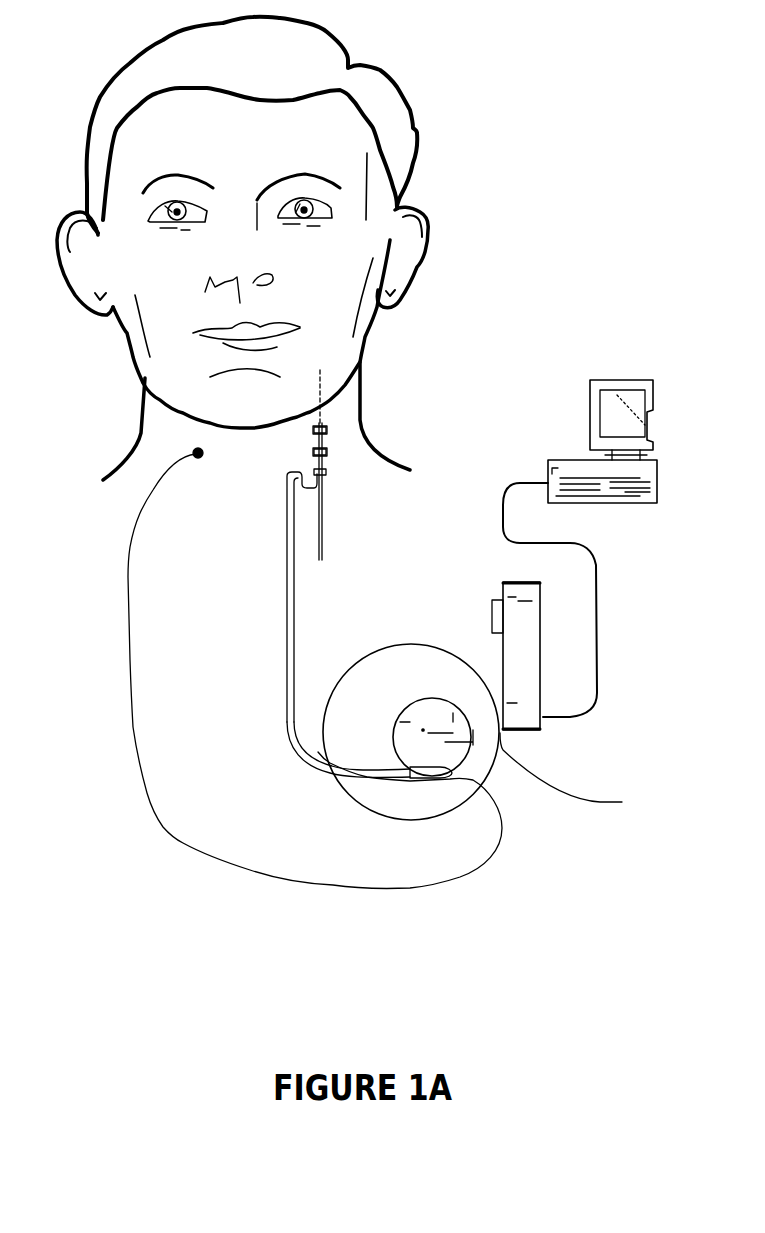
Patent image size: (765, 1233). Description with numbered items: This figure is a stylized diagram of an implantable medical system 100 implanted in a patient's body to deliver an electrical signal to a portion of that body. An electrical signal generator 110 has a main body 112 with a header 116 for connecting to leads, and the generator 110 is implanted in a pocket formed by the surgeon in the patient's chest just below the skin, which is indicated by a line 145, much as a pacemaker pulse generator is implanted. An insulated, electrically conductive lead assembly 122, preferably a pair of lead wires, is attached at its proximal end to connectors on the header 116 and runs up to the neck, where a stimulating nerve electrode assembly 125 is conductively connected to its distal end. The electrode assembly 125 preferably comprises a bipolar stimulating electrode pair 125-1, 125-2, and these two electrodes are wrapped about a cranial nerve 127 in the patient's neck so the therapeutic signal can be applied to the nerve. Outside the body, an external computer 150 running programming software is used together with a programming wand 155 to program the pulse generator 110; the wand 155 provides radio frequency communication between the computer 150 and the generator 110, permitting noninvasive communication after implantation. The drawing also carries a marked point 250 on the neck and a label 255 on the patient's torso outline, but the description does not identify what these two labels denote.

The implantable medical system 100 is at (511, 203).
The electrical signal generator 110 is at (377, 737).
The main body 112 is at (463, 697).
The header 116 is at (427, 779).
The lead assembly 122 is at (287, 597).
The electrode assembly 125 is at (302, 451).
The first stimulating electrode 125-1 is at (327, 430).
The second stimulating electrode 125-2 is at (324, 452).
The cranial nerve 127 is at (322, 415).
The line indicating skin 145 is at (583, 774).
The external computer 150 is at (640, 503).
The programming wand 155 is at (503, 590).
The sensor location 250 is at (194, 454).
The patient body 255 is at (130, 705).